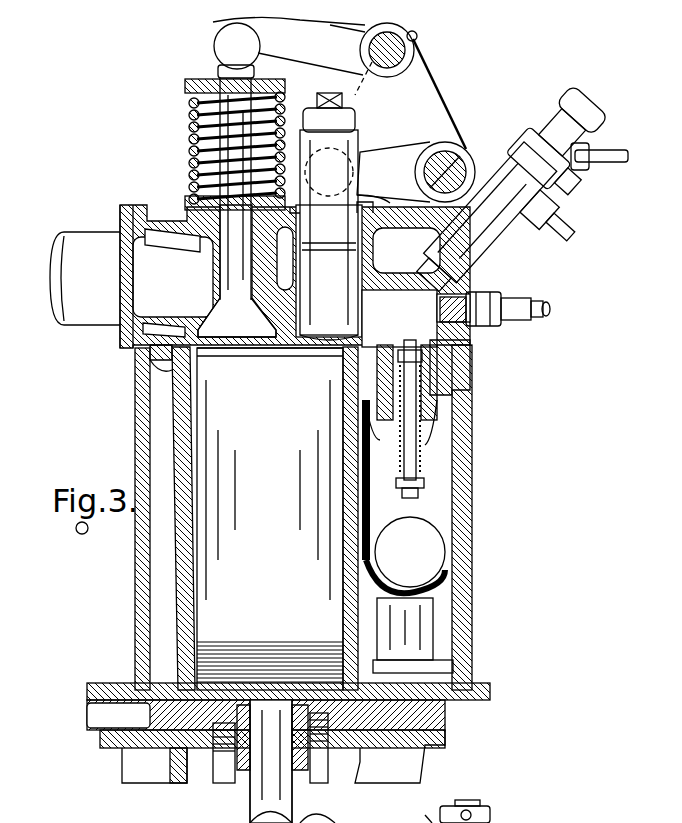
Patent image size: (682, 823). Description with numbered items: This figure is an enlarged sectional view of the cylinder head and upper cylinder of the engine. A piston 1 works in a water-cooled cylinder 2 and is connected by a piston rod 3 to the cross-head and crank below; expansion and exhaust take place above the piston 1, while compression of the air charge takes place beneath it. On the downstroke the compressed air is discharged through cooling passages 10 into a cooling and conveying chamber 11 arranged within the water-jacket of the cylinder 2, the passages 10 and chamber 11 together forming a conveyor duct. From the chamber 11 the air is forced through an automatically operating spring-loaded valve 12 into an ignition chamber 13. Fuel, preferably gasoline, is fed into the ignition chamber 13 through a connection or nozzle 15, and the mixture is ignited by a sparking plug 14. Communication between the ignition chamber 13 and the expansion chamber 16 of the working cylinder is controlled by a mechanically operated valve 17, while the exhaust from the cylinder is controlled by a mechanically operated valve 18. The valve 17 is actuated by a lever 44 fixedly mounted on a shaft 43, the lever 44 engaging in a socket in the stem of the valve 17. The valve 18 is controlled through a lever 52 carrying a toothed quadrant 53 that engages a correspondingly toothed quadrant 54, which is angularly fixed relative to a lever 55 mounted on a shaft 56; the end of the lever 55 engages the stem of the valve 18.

The piston 1 is at (230, 645).
The water-cooled cylinder 2 is at (177, 403).
The piston rod 3 is at (262, 782).
The cooling passages 10 is at (435, 640).
The cooling and conveying chamber 11 is at (432, 555).
The spring-loaded valve 12 is at (408, 345).
The ignition chamber 13 is at (415, 290).
The sparking plug 14 is at (508, 300).
The connection or nozzle 15 is at (590, 128).
The expansion chamber 16 is at (270, 369).
The mechanically operated valve 17 is at (320, 345).
The exhaust valve 18 is at (205, 318).
The shaft 43 is at (460, 168).
The lever 44 is at (375, 160).
The lever 52 is at (320, 822).
The toothed quadrant 53 is at (492, 818).
The toothed quadrant 54 is at (413, 806).
The lever 55 is at (222, 180).
The shaft 56 is at (395, 22).